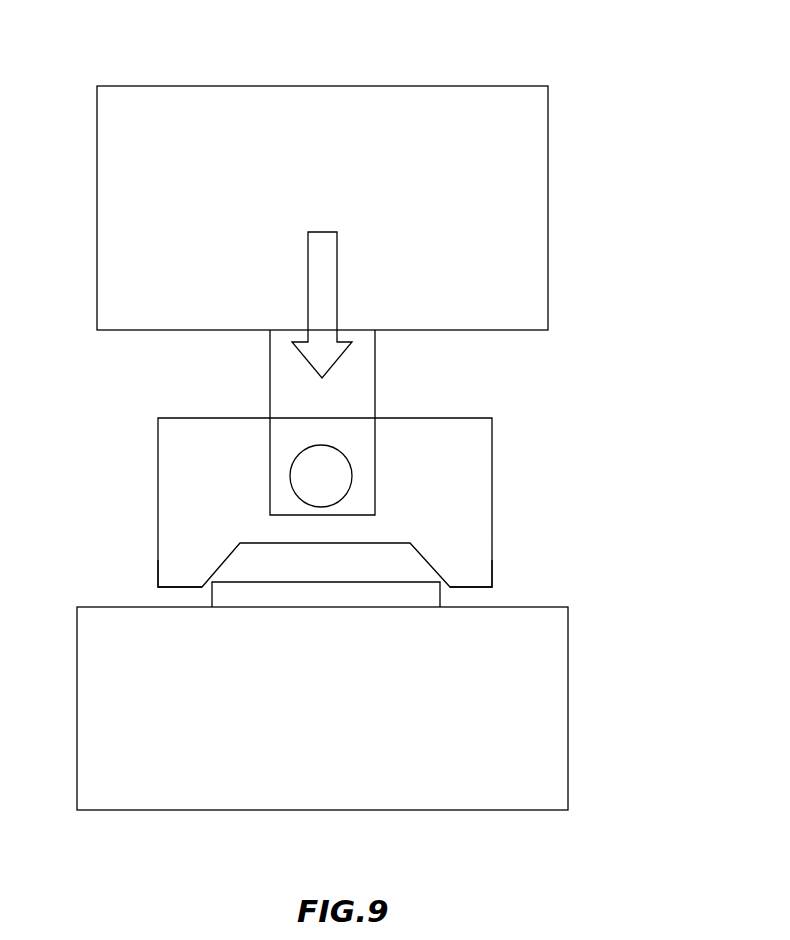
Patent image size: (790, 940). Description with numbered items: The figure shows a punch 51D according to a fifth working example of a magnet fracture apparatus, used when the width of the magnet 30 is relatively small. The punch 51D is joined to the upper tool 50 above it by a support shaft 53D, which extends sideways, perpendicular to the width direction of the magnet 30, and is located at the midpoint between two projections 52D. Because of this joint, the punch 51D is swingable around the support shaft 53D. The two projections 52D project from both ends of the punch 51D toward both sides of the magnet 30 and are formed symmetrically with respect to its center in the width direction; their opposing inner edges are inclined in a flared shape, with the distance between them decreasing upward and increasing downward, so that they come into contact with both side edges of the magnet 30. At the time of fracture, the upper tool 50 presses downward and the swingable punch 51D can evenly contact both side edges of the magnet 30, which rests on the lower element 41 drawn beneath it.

The upper tool 50 is at (528, 218).
The punch 51D is at (472, 448).
The projections 52D is at (180, 565).
The support shaft 53D is at (327, 462).
The magnet 30 is at (328, 592).
The base (41, 42) 41 is at (542, 688).